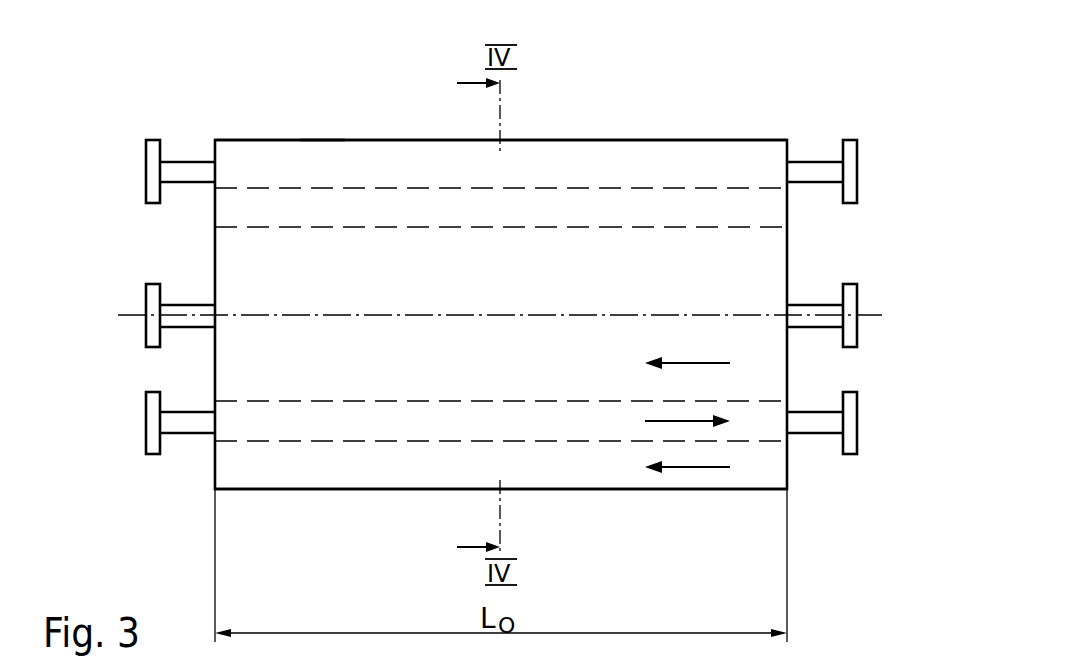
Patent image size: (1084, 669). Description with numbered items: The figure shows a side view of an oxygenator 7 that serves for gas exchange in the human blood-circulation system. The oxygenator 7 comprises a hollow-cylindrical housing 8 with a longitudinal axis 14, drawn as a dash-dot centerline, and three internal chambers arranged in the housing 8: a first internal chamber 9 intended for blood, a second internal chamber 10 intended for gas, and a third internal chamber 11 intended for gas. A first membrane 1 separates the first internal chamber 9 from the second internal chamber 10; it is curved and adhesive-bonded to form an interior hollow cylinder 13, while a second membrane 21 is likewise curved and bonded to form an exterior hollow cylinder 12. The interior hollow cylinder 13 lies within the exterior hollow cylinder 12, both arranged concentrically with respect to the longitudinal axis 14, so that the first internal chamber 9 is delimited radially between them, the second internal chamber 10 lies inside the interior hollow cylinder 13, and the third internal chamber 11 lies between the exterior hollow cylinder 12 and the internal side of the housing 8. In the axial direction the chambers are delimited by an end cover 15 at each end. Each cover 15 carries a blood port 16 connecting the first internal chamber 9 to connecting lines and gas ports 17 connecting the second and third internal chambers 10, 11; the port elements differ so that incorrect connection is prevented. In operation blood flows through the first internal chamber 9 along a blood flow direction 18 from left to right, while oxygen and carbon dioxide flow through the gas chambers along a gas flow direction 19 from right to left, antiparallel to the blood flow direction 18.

The first membrane 1 is at (730, 227).
The oxygenator 7 is at (554, 134).
The housing 8 is at (322, 140).
The first internal chamber 9 is at (315, 437).
The second internal chamber 10 is at (324, 373).
The third internal chamber 11 is at (324, 482).
The exterior hollow cylinder 12 is at (703, 187).
The interior hollow cylinder 13 is at (762, 228).
The longitudinal axis 14 is at (132, 315).
The end cover 15 is at (212, 469).
The blood port 16 is at (152, 421).
The gas port 17 is at (152, 152).
The blood flow direction 18 is at (700, 421).
The gas flow direction 19 is at (690, 363).
The second membrane 21 is at (608, 188).